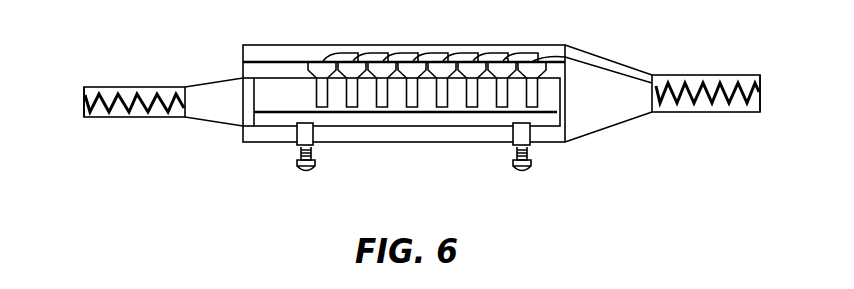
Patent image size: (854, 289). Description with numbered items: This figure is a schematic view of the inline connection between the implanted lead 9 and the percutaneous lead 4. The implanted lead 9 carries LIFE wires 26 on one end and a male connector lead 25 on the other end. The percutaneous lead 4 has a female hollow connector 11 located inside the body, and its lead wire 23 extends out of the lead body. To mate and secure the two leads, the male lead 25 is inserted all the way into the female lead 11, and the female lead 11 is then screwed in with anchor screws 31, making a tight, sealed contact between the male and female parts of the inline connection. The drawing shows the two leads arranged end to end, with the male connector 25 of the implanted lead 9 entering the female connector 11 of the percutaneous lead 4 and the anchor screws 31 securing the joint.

The implanted lead 9 is at (140, 86).
The LIFE wires 26 is at (83, 114).
The male connector lead 25 is at (215, 122).
The female hollow connector 11 is at (622, 124).
The percutaneous lead 4 is at (708, 113).
The lead wire 23 is at (762, 101).
The anchor screws 31 is at (525, 176).